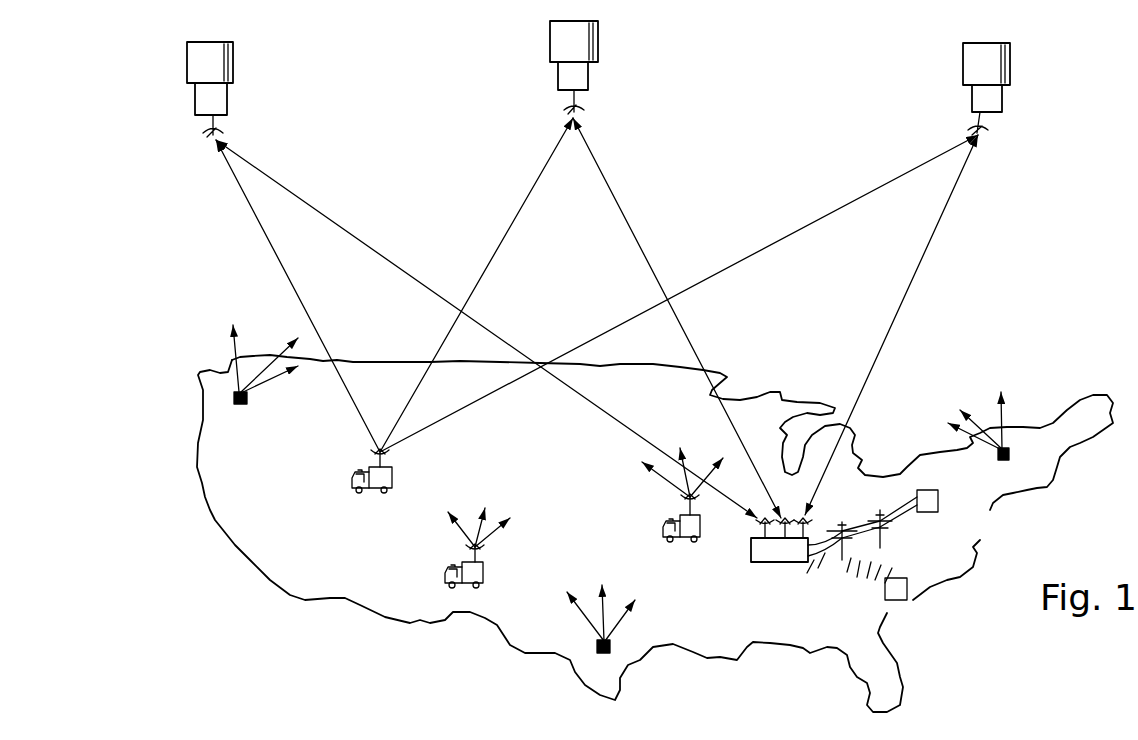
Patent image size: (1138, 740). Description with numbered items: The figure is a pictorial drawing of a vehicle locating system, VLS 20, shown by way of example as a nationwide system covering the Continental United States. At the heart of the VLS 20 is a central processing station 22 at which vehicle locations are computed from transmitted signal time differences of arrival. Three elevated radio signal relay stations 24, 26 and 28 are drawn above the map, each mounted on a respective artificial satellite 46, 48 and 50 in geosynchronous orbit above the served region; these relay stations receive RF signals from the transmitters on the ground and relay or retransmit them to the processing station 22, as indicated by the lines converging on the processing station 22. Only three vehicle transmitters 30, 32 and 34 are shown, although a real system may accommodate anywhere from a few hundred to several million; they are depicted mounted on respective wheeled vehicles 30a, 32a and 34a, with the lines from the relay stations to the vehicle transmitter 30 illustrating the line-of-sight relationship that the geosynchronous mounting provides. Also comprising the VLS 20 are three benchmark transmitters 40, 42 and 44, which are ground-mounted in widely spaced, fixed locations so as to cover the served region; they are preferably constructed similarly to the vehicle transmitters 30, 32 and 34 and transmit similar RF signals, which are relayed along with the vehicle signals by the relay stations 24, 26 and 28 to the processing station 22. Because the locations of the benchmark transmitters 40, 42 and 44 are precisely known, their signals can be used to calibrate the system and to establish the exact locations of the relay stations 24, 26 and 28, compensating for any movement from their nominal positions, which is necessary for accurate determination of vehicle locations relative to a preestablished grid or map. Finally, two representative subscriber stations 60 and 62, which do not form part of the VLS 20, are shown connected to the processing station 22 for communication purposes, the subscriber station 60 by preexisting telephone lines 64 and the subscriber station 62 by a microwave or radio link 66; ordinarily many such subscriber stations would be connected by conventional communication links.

The vehicle locating system 20 is at (122, 276).
The central processing station 22 is at (749, 552).
The first elevated radio signal relay station 24 is at (227, 100).
The second elevated radio signal relay station 26 is at (558, 80).
The third elevated radio signal relay station 28 is at (972, 100).
The vehicle transmitter 30 is at (372, 458).
The wheeled vehicle 30a is at (392, 476).
The vehicle transmitter 32 is at (682, 500).
The wheeled vehicle 32a is at (663, 530).
The vehicle transmitter 34 is at (480, 552).
The wheeled vehicle 34a is at (483, 576).
The benchmark transmitter 40 is at (241, 405).
The benchmark transmitter 42 is at (597, 645).
The benchmark transmitter 44 is at (1003, 461).
The artificial satellite 46 is at (233, 50).
The artificial satellite 48 is at (550, 45).
The artificial satellite 50 is at (963, 60).
The subscriber station 60 is at (940, 492).
The subscriber station 62 is at (907, 590).
The telephone lines 64 is at (880, 510).
The microwave or radio link 66 is at (838, 562).